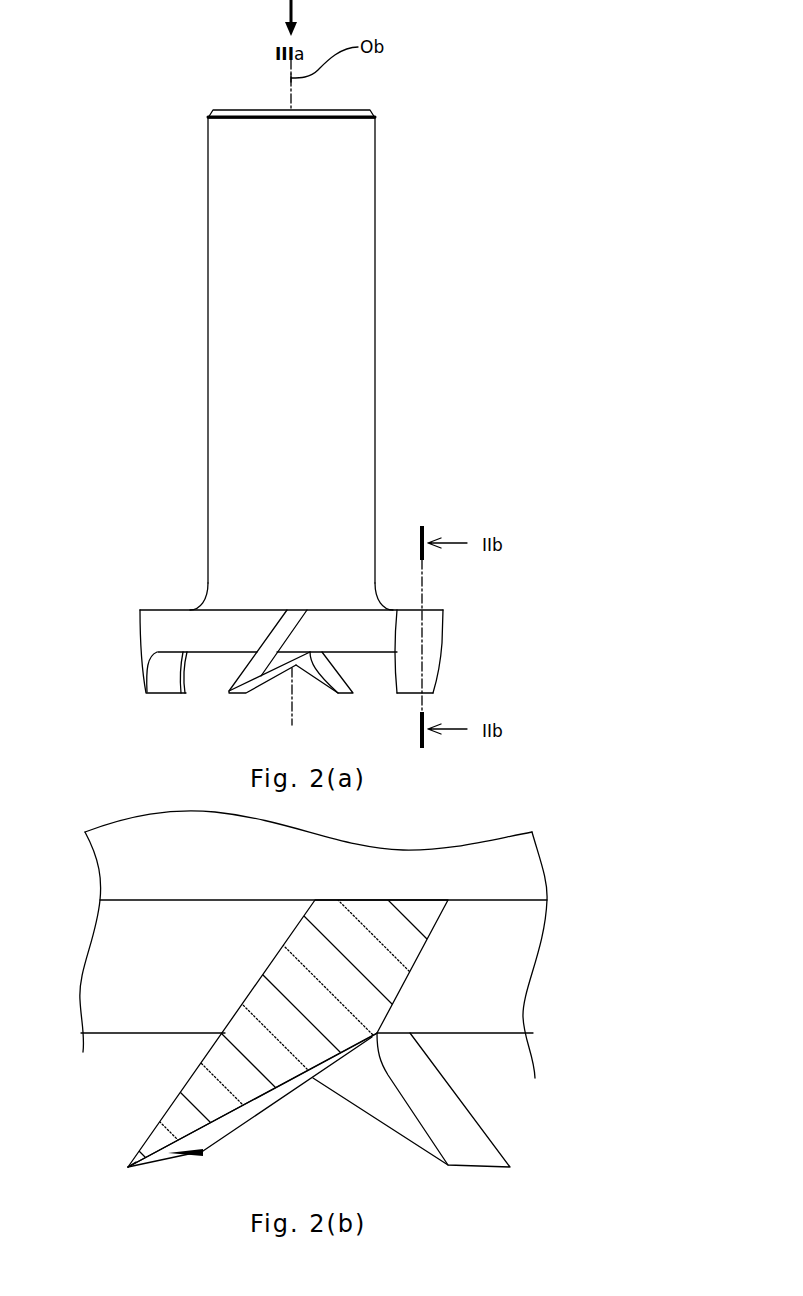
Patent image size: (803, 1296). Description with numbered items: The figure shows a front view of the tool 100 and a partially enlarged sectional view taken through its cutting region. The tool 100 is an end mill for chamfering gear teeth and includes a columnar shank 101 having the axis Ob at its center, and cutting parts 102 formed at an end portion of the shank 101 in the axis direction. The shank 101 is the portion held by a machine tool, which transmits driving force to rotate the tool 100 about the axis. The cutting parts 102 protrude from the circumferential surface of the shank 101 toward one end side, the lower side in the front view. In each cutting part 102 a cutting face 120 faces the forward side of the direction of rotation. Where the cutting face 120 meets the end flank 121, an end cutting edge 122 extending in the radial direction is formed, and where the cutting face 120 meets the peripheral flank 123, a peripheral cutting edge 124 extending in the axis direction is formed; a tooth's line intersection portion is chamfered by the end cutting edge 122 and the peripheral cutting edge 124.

In FIG. 2A, the tool 100 is at (497, 107).
In FIG. 2B, the tool 100 is at (568, 906).
In FIG. 2A, the shank 101 is at (335, 234).
In FIG. 2A, the cutting part 102 is at (266, 633).
In FIG. 2B, the cutting part 102 is at (225, 1013).
In FIG. 2A, the cutting face 120 is at (428, 653).
In FIG. 2B, the cutting face 120 is at (168, 1110).
In FIG. 2B, the end flank 121 is at (168, 1160).
In FIG. 2A, the end cutting edge 122 is at (410, 694).
In FIG. 2B, the end cutting edge 122 is at (128, 1167).
In FIG. 2A, the peripheral flank 123 is at (268, 660).
In FIG. 2A, the peripheral cutting edge 124 is at (246, 678).